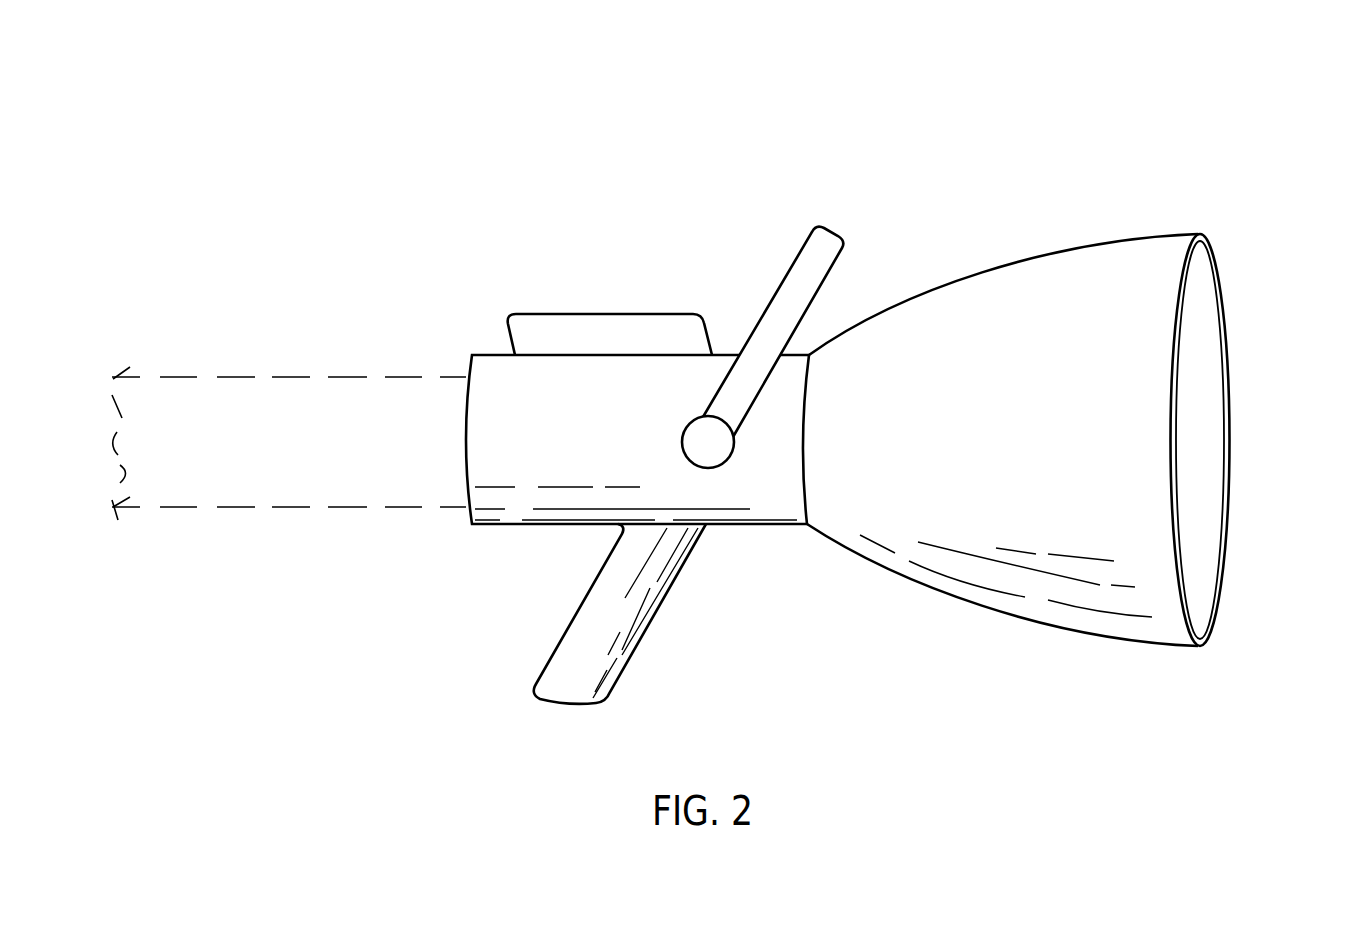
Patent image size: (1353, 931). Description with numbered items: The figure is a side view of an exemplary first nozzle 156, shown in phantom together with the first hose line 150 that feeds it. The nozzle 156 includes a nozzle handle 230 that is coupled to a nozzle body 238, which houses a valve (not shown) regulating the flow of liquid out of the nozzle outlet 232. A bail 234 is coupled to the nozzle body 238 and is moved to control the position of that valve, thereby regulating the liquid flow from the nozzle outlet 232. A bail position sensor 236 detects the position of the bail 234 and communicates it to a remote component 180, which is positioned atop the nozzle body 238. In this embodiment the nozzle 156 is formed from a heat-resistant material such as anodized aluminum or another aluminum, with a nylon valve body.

The first hose line 150 is at (236, 378).
The first nozzle 156 is at (487, 124).
The remote component 180 is at (568, 325).
The nozzle handle 230 is at (645, 625).
The nozzle outlet 232 is at (1230, 442).
The bail 234 is at (833, 228).
The bail position sensor 236 is at (697, 416).
The nozzle body 238 is at (528, 477).